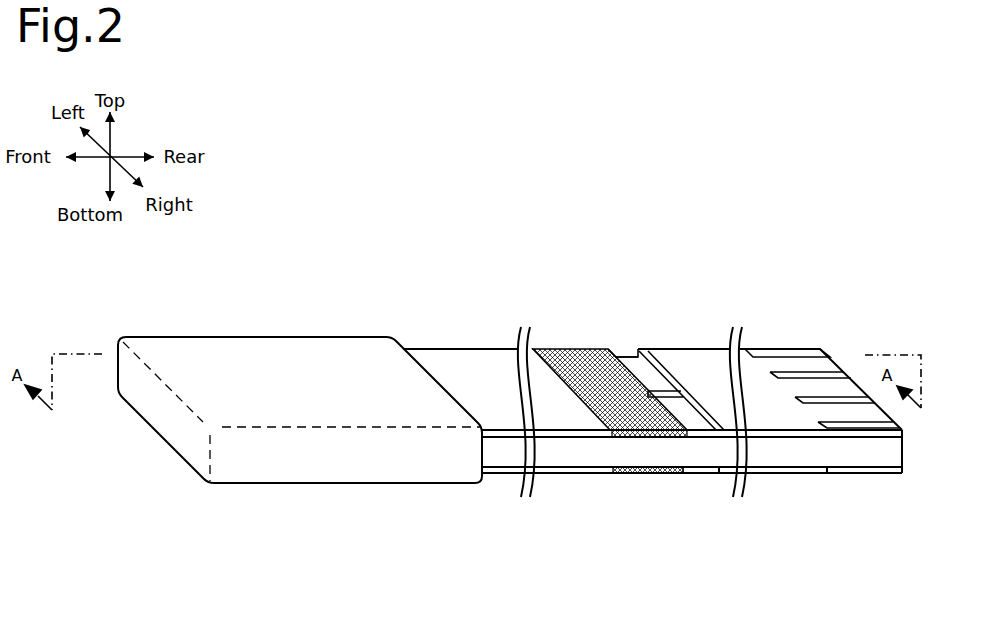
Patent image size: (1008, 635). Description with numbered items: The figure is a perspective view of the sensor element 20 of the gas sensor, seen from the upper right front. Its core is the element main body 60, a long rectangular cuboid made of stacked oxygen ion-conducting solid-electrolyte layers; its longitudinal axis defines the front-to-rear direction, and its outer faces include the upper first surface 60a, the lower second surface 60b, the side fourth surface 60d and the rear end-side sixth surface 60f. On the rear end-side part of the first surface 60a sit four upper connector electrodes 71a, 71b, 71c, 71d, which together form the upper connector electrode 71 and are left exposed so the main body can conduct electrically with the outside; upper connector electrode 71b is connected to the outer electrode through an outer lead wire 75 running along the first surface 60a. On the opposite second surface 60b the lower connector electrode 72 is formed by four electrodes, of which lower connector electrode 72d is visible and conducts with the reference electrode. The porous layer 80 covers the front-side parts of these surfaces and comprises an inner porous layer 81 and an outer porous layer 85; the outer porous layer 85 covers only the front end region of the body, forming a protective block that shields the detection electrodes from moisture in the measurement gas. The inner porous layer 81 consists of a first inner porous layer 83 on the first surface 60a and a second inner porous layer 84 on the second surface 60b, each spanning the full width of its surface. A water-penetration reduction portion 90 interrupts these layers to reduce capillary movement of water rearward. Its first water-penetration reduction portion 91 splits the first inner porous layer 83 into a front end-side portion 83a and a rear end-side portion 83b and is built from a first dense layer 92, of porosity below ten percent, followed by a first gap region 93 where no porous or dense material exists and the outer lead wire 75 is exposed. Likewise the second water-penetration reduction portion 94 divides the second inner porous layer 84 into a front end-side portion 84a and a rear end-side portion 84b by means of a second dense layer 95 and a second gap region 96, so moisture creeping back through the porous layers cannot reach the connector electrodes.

The sensor element 20 is at (795, 150).
The porous layer 80 is at (300, 325).
The inner porous layer 81 is at (378, 232).
The outer porous layer 85 is at (293, 350).
The first inner porous layer 83 is at (636, 336).
The front end-side portion 83a is at (452, 348).
The rear end-side portion 83b is at (707, 360).
The water-penetration reduction portion 90 is at (613, 392).
The first water-penetration reduction portion 91 is at (610, 346).
The first dense layer 92 is at (558, 349).
The first gap region 93 is at (620, 344).
The first surface 60a is at (630, 360).
The outer lead wire 75 is at (656, 388).
The element main body 60 is at (546, 458).
The second surface 60b is at (493, 468).
The fourth surface 60d is at (594, 458).
The sixth surface 60f is at (902, 452).
The upper connector electrode 71 is at (818, 341).
The upper connector electrode 71a is at (765, 352).
The upper connector electrode 71b is at (792, 375).
The upper connector electrode 71c is at (827, 400).
The upper connector electrode 71d is at (858, 360).
The second inner porous layer 84 is at (654, 542).
The front end-side portion 84a is at (579, 474).
The rear end-side portion 84b is at (765, 474).
The second water-penetration reduction portion 94 is at (658, 522).
The second dense layer 95 is at (643, 475).
The second gap region 96 is at (704, 480).
The lower connector electrode 72 is at (853, 522).
The lower connector electrode 72d is at (857, 474).